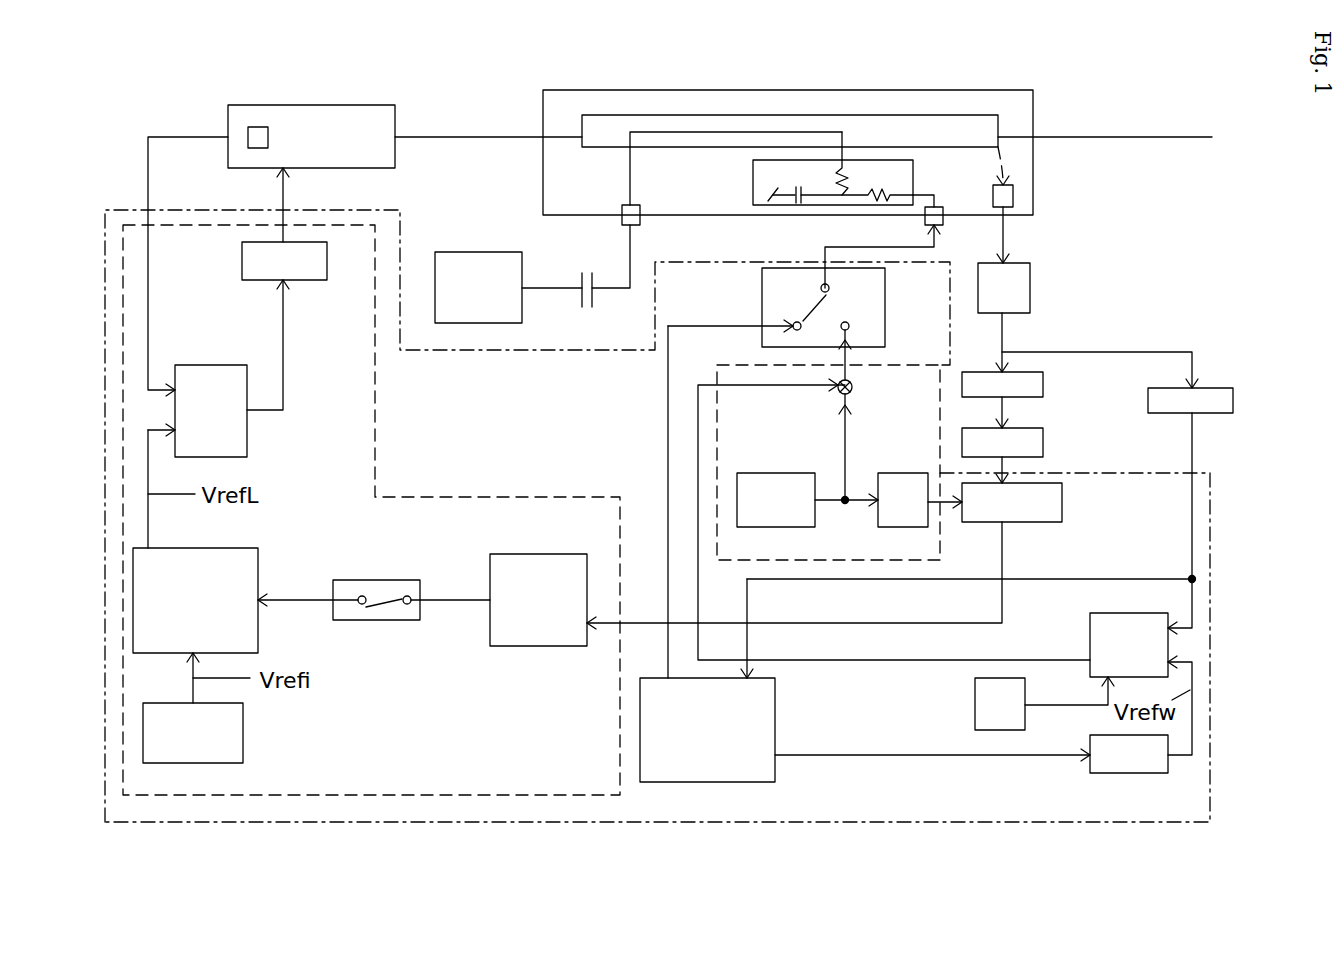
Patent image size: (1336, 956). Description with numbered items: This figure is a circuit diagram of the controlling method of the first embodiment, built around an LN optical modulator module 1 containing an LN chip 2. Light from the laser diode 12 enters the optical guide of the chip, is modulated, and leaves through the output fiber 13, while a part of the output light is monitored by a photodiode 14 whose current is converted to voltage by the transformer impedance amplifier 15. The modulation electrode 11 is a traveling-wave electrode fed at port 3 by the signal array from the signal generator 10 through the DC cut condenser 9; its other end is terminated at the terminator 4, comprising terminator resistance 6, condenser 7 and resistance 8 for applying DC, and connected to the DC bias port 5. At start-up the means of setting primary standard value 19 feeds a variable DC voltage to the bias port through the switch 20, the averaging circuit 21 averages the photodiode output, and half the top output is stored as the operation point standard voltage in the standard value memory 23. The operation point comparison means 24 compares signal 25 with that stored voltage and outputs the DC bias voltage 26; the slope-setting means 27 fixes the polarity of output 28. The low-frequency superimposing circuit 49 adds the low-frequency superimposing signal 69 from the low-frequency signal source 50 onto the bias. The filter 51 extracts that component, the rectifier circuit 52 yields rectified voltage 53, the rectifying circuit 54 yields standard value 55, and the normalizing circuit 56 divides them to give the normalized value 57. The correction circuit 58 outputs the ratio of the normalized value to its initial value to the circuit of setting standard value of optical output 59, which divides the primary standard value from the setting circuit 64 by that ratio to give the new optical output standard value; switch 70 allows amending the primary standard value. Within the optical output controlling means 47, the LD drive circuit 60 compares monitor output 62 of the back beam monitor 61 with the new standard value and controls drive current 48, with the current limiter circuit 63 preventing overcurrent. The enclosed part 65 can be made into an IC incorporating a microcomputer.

The LN optical modulator module 1 is at (555, 107).
The LN chip 2 is at (960, 127).
The port 3 is at (635, 217).
The terminator 4 is at (752, 192).
The DC bias port 5 is at (943, 215).
The terminator resistance 6 is at (836, 186).
The condenser 7 is at (793, 197).
The resistance for applying DC 8 is at (880, 200).
The DC cut condenser 9 is at (585, 297).
The signal generator 10 is at (470, 268).
The modulation electrode 11 is at (645, 132).
The laser diode 12 is at (370, 152).
The output fiber 13 is at (1137, 137).
The photodiode 14 is at (1013, 196).
The transformer impedance amplifier 15 is at (1012, 288).
The means of setting primary standard value 19 is at (752, 722).
The switch 20 is at (760, 287).
The averaging circuit 21 is at (1175, 400).
The standard value memory 23 is at (1115, 762).
The operation point comparison means 24 is at (1105, 640).
The comparing signal 25 is at (1190, 597).
The DC bias voltage 26 is at (898, 663).
The slope-setting means 27 is at (988, 706).
The output of slope-setting means 28 is at (1058, 705).
The optical output controlling means 47 is at (355, 772).
The drive current 48 is at (285, 338).
The low-frequency superimposing circuit 49 is at (853, 392).
The low-frequency signal source 50 is at (753, 493).
The filter 51 is at (1025, 387).
The rectifier circuit 52 is at (1030, 445).
The rectified voltage 53 is at (1003, 467).
The rectifying circuit 54 is at (900, 490).
The standard value 55 is at (945, 502).
The normalizing circuit 56 is at (1045, 495).
The normalized low-frequency component value 57 is at (640, 623).
The correction circuit of optical output standard value 58 is at (515, 618).
The circuit of setting standard value of optical output 59 is at (245, 627).
The LD drive circuit 60 is at (222, 428).
The back beam monitor 61 is at (255, 145).
The monitor output 62 is at (148, 312).
The current limiter circuit 63 is at (250, 258).
The optical output primary standard value setting circuit 64 is at (225, 735).
The enclosed part 65 is at (815, 820).
The low-frequency superimposing signal 69 is at (843, 443).
The switch 70 is at (385, 592).